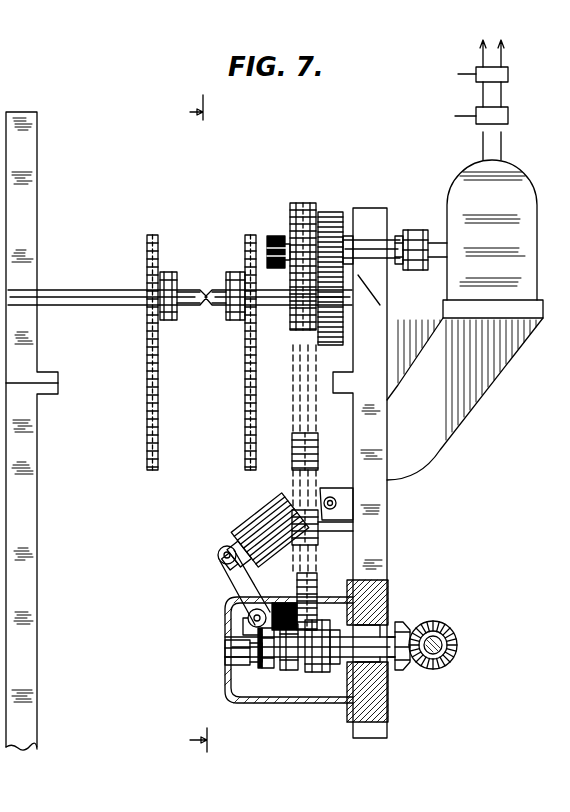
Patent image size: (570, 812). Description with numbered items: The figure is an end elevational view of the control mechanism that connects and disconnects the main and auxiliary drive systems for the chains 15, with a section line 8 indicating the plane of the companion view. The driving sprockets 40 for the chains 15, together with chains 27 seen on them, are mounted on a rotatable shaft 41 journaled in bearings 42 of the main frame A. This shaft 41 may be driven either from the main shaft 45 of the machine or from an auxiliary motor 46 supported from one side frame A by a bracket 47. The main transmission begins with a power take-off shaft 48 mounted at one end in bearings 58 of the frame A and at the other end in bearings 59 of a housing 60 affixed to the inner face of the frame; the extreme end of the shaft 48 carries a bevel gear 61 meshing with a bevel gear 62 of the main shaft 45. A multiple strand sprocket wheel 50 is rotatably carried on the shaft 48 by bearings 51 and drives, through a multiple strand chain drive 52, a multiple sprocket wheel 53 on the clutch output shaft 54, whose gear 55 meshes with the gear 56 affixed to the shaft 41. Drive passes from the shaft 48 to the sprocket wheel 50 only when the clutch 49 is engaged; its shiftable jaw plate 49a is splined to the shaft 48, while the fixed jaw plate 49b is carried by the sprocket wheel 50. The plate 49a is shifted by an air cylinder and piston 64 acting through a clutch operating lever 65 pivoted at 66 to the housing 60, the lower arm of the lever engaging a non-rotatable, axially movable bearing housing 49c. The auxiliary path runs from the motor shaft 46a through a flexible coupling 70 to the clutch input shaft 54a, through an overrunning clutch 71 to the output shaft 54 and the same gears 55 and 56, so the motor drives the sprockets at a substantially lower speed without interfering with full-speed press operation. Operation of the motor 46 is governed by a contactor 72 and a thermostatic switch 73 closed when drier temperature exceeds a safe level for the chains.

The section line 8- 8 is at (191, 426).
The main frame A is at (36, 457).
The chains 15 is at (245, 398).
The chains 27 is at (158, 238).
The driving sprockets 40 is at (232, 272).
The rotatable shaft 41 is at (218, 306).
The bearings 42 is at (37, 290).
The main shaft 45 is at (440, 636).
The auxiliary motor 46 is at (520, 175).
The motor shaft 46a is at (433, 238).
The bracket 47 is at (490, 372).
The power take-off shaft 48 is at (392, 665).
The clutch 49 is at (278, 600).
The shiftable jaw plate 49a is at (280, 660).
The fixed jaw plate 49b is at (300, 672).
The bearing housing 49c is at (225, 688).
The multiple strand sprocket wheel 50 is at (303, 680).
The bearings 51 is at (322, 675).
The multiple strand chain drive 52 is at (318, 450).
The multiple sprocket wheel 53 is at (286, 206).
The clutch output shaft 54 is at (276, 236).
The clutch input shaft 54a is at (398, 238).
The gear 55 is at (330, 212).
The gear 56 is at (318, 350).
The bearings 58 is at (392, 600).
The bearings 59 is at (225, 660).
The housing 60 is at (225, 606).
The bevel gear 61 is at (408, 622).
The bevel gear 62 is at (455, 660).
The air cylinder and piston 64 is at (254, 510).
The clutch operating lever 65 is at (212, 564).
The pivot 66 is at (248, 624).
The flexible coupling 70 is at (420, 262).
The overrunning clutch 71 is at (380, 300).
The contactor 72 is at (508, 117).
The thermostatic switch 73 is at (508, 78).